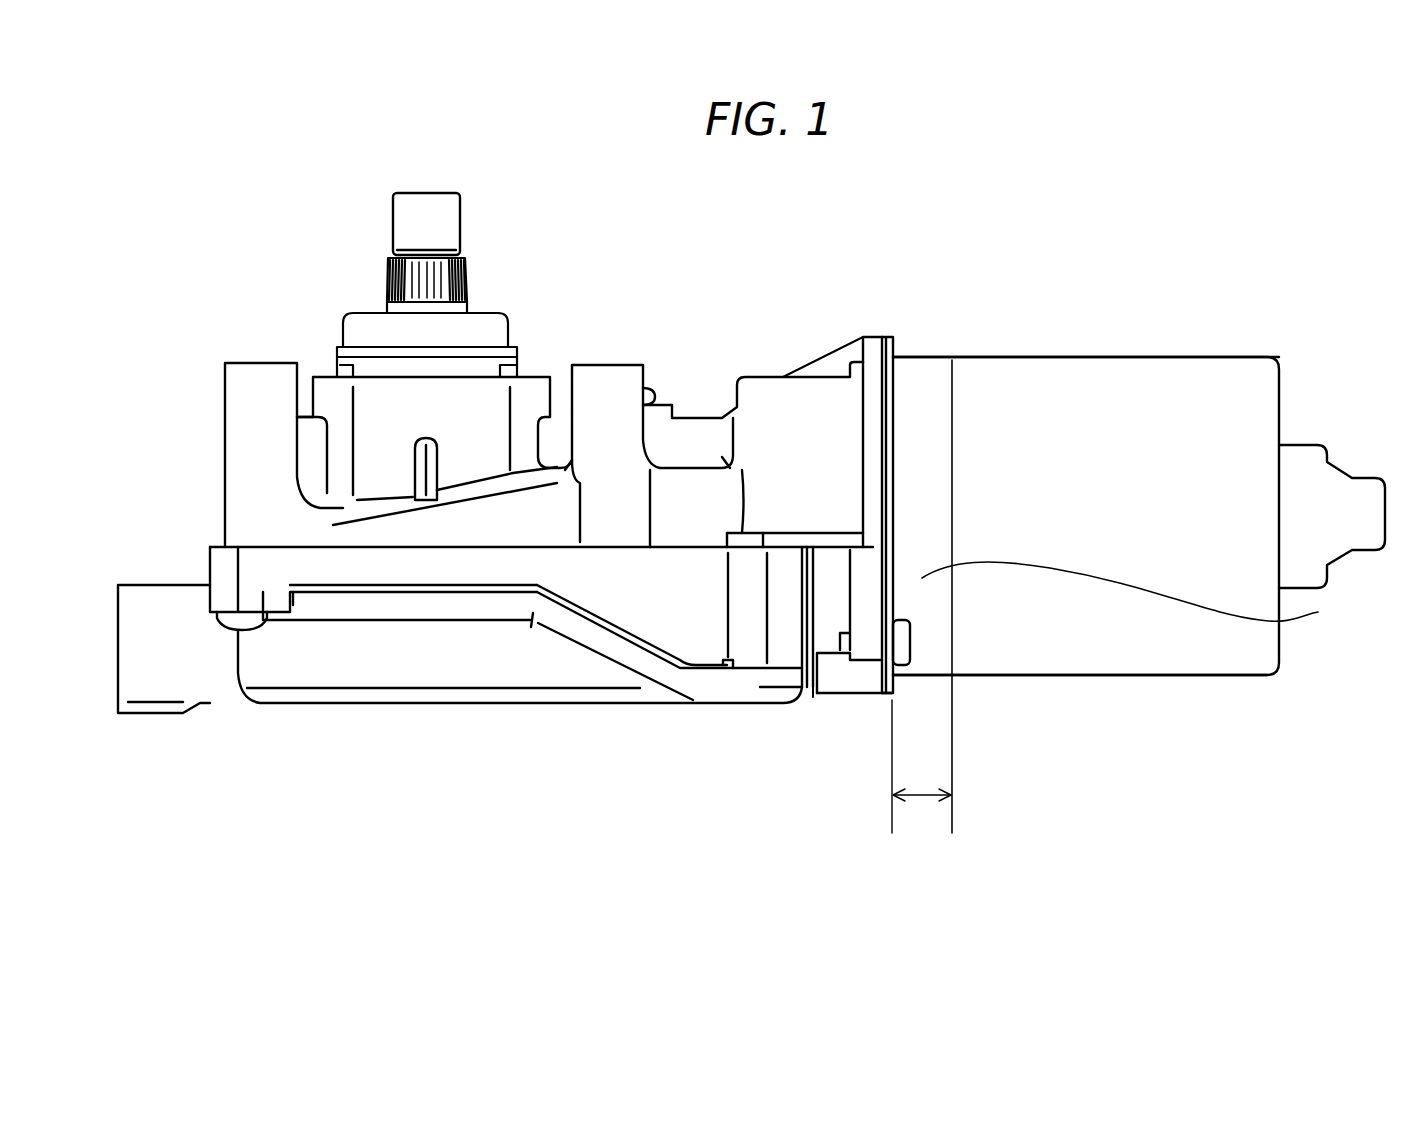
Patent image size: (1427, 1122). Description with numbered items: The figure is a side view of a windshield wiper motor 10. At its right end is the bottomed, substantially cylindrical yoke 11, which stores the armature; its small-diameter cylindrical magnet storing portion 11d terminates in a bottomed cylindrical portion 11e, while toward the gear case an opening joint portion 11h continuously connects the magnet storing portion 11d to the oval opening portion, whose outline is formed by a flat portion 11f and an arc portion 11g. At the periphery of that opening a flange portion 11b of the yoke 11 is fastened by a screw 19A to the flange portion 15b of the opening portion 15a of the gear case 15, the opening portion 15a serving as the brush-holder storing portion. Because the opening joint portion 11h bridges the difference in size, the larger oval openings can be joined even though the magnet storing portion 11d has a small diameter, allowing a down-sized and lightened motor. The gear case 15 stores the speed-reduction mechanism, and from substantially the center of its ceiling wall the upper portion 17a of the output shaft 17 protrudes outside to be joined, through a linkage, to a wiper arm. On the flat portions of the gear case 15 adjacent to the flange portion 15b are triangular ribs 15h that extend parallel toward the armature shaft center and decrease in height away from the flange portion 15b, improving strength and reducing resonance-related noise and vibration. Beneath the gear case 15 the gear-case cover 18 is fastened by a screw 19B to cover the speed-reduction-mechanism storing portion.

The windshield wiper motor 10 is at (707, 738).
The yoke 11 is at (1114, 356).
The flange portion 11b is at (820, 672).
The magnet storing portion 11d is at (1195, 647).
The bottomed cylindrical portion 11e is at (1350, 472).
The flat portion 11f is at (930, 357).
The arc portion 11g is at (1153, 598).
The opening joint portion 11h is at (922, 779).
The gear case 15 is at (783, 375).
The opening portion 15a is at (885, 393).
The flange portion 15b is at (872, 347).
The rib 15h is at (830, 367).
The output shaft 17 is at (470, 299).
The upper portion 17a is at (460, 232).
The gear-case cover 18 is at (510, 703).
The screw 19A is at (857, 693).
The screw 19B is at (228, 630).